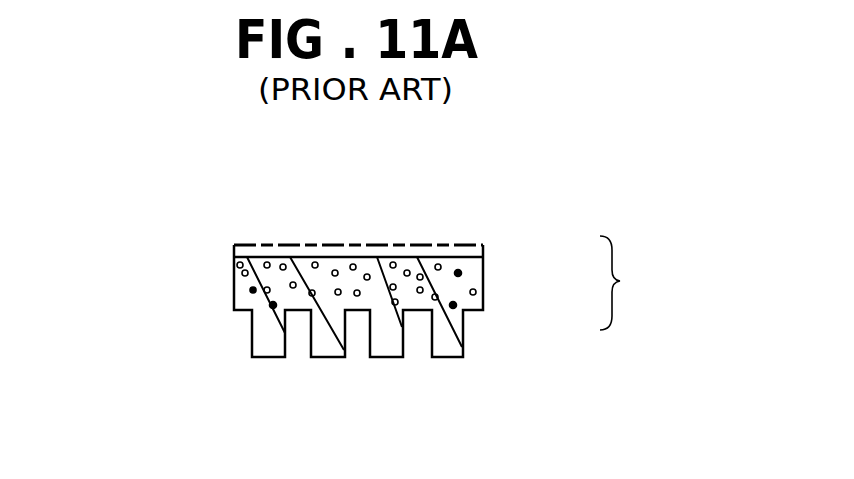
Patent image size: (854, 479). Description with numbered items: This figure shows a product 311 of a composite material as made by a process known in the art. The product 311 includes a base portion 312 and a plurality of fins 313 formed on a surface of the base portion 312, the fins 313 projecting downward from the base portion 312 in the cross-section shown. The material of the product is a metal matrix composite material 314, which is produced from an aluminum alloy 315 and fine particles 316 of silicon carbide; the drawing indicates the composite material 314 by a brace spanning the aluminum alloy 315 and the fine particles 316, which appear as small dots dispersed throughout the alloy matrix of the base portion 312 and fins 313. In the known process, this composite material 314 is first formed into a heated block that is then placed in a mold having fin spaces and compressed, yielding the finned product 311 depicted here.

The product 311 is at (207, 257).
The base portion 312 is at (452, 257).
The fins 313 is at (322, 357).
The metal matrix composite material 314 is at (646, 283).
The aluminum alloy 315 is at (485, 267).
The fine particles 316 is at (270, 305).